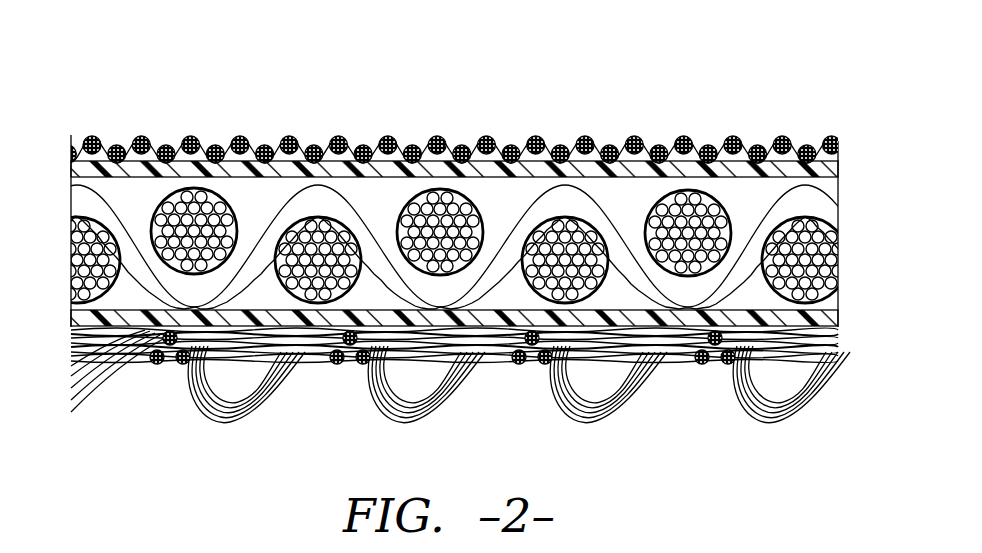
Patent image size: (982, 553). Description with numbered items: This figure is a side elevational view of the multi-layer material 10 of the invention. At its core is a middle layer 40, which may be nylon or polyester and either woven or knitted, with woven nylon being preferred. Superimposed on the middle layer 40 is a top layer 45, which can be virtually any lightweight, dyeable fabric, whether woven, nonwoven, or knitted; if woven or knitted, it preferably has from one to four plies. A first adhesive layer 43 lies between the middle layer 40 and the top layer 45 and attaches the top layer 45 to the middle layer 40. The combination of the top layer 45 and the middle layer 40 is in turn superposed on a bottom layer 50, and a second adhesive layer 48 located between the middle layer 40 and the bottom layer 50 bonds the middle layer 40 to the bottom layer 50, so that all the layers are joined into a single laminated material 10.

The multi-layer material 10 is at (454, 175).
The middle layer 40 is at (627, 283).
The first adhesive layer 43 is at (717, 177).
The top layer 45 is at (312, 137).
The second adhesive layer 48 is at (673, 323).
The bottom layer 50 is at (437, 415).